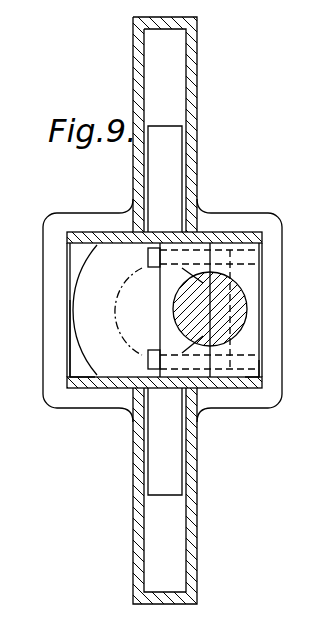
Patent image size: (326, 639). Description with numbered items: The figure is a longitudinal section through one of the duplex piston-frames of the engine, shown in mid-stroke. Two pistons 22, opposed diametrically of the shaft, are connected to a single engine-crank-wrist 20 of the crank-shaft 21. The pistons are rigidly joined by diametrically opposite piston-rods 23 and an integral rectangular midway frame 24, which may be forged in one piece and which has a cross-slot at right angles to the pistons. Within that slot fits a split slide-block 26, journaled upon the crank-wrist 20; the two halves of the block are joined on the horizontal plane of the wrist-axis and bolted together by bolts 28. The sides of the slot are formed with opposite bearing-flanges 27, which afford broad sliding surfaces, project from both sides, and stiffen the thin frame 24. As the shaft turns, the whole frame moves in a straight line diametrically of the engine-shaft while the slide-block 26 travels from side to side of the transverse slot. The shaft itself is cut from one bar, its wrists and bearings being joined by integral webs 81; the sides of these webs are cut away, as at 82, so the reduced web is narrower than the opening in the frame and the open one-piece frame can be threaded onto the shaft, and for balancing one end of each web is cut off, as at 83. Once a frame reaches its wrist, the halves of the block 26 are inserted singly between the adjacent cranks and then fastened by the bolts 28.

The engine-crank-wrist 20 is at (238, 292).
The crank-shaft 21 is at (118, 295).
The piston 22 is at (134, 51).
The piston-rod 23 is at (197, 166).
The midway frame 24 is at (44, 318).
The split slide-block 26 is at (160, 314).
The bearing-flange 27 is at (232, 239).
The bolts 28 is at (148, 259).
The integral web 81 is at (82, 338).
The cutaway side 82 is at (97, 246).
The cut-off web end 83 is at (261, 371).